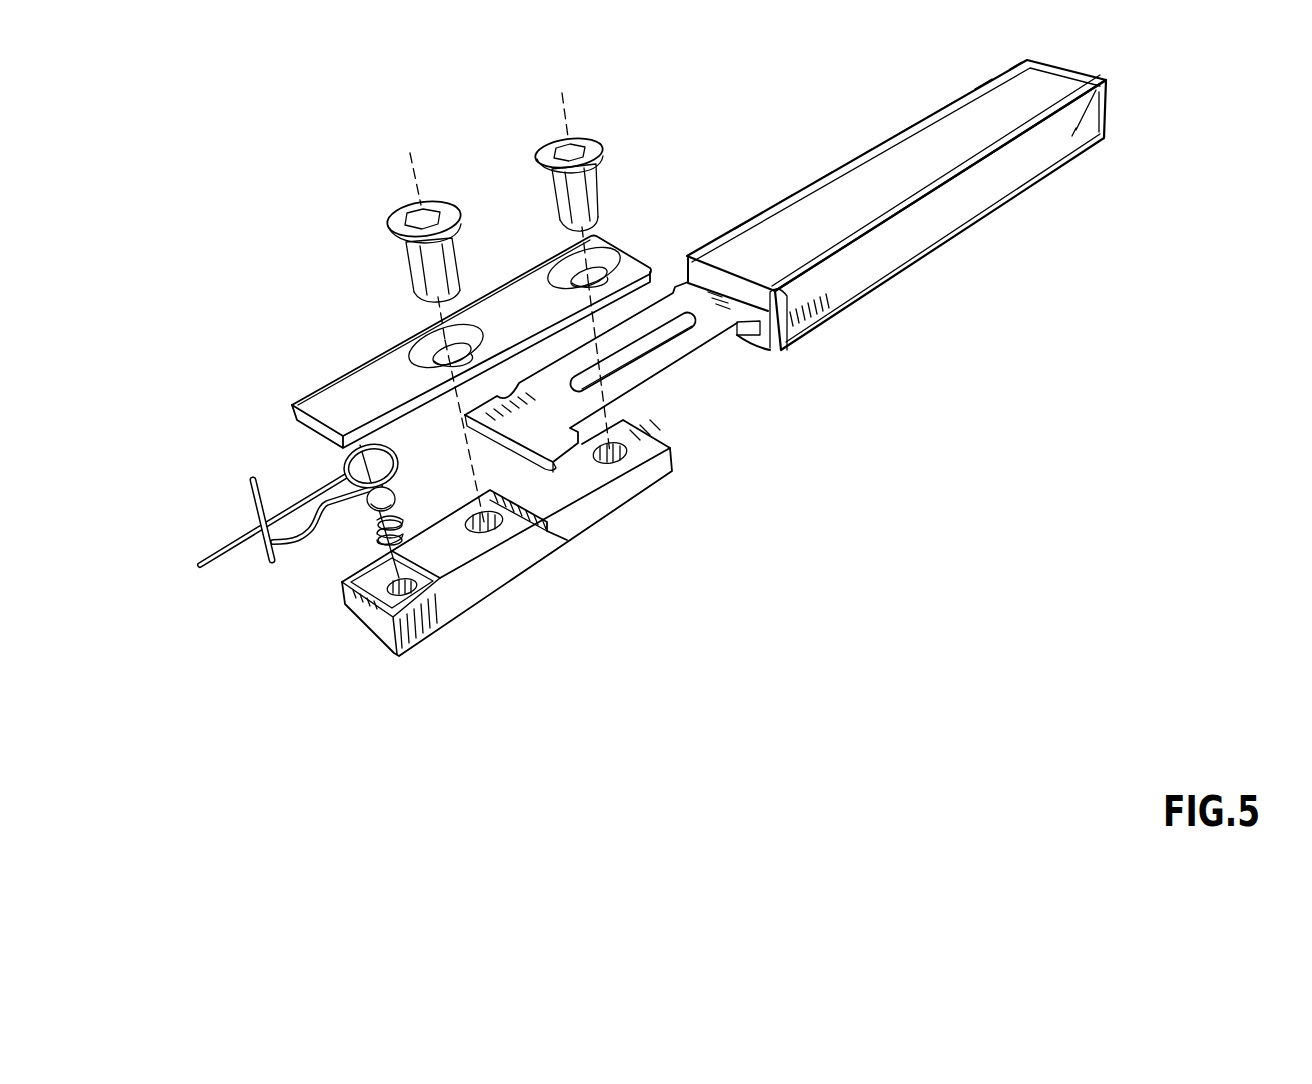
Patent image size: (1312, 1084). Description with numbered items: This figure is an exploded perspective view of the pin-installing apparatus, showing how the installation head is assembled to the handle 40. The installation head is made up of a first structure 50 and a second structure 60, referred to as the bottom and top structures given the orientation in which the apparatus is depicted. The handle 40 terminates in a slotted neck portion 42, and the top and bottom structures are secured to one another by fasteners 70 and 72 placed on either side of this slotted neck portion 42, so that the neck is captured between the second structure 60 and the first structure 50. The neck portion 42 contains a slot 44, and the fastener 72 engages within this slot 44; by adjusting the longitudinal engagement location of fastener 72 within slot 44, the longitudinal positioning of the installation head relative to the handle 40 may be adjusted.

The handle 40 is at (968, 202).
The slotted neck portion 42 is at (672, 370).
The slot 44 is at (668, 338).
The first structure 50 is at (503, 570).
The second structure 60 is at (390, 365).
The fastener 70 is at (450, 215).
The fastener 72 is at (592, 142).